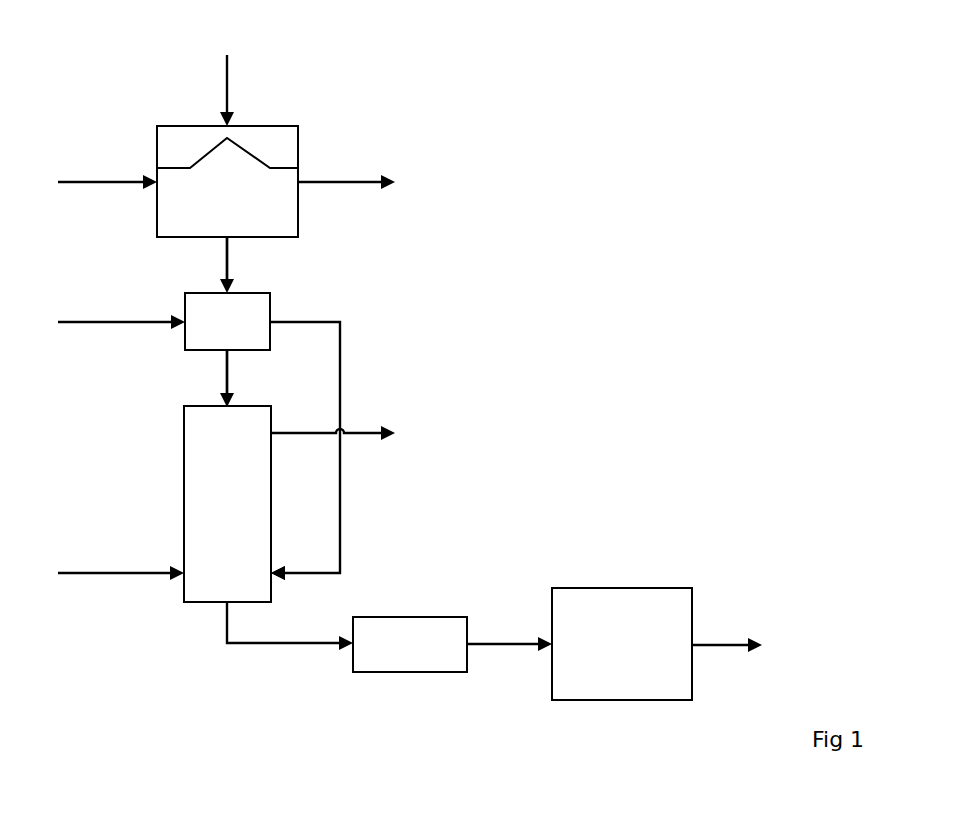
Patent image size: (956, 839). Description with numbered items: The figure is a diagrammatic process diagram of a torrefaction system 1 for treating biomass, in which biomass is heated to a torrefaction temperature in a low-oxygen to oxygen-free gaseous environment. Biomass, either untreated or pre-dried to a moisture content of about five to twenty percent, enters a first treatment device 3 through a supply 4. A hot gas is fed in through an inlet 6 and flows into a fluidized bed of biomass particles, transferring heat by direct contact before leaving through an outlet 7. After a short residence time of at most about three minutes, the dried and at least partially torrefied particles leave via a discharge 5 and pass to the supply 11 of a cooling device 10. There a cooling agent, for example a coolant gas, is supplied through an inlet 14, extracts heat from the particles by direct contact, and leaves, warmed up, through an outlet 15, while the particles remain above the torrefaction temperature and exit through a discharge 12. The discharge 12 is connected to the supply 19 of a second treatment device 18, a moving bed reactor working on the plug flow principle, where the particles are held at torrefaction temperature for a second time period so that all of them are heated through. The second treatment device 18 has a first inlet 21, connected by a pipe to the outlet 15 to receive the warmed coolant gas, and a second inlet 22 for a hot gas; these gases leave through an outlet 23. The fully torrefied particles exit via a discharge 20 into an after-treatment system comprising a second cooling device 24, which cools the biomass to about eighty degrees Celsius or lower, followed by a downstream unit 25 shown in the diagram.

The torrefaction system 1 is at (420, 166).
The first treatment device 3 is at (283, 148).
The supply 4 is at (238, 120).
The discharge 5 is at (222, 238).
The inlet 6 is at (155, 168).
The outlet 7 is at (298, 183).
The cooling device 10 is at (253, 305).
The supply 11 is at (237, 292).
The discharge 12 is at (222, 352).
The inlet 14 is at (160, 323).
The outlet 15 is at (300, 320).
The second treatment device 18 is at (203, 421).
The supply 19 is at (237, 405).
The discharge 20 is at (222, 603).
The first inlet 21 is at (273, 580).
The second inlet 22 is at (183, 567).
The outlet 23 is at (272, 437).
The second cooling device 24 is at (388, 659).
The fifth unit 25 is at (583, 687).